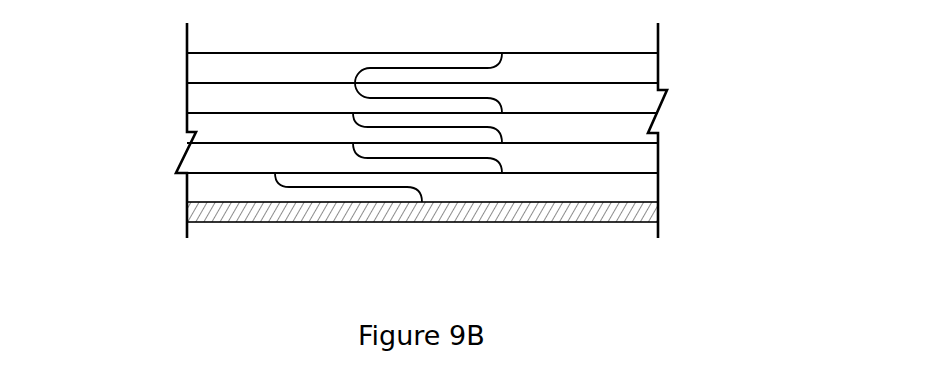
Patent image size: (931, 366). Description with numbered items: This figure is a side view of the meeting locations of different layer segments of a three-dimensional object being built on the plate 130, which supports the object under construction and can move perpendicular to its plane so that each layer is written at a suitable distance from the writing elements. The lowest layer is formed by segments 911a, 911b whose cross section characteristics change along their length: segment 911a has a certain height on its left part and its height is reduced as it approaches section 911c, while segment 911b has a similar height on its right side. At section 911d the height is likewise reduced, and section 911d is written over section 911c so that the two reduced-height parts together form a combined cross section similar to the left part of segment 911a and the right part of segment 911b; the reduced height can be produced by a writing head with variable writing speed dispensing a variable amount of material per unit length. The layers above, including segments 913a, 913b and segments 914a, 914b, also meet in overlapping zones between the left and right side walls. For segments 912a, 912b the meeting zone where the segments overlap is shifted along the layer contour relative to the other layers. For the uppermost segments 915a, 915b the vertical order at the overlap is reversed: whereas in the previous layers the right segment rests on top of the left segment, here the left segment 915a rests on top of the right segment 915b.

The segment 915a is at (197, 67).
The segment 915b is at (643, 63).
The fourth layer left portion 914a is at (195, 99).
The fourth layer right portion 914b is at (640, 90).
The third layer left portion 913a is at (203, 125).
The third layer right portion 913b is at (635, 122).
The segment 912a is at (197, 153).
The segment 912b is at (643, 153).
The segment 911a is at (203, 185).
The segment 911b is at (643, 181).
The section 911c is at (372, 193).
The section 911d is at (327, 177).
The plate 130 is at (610, 213).